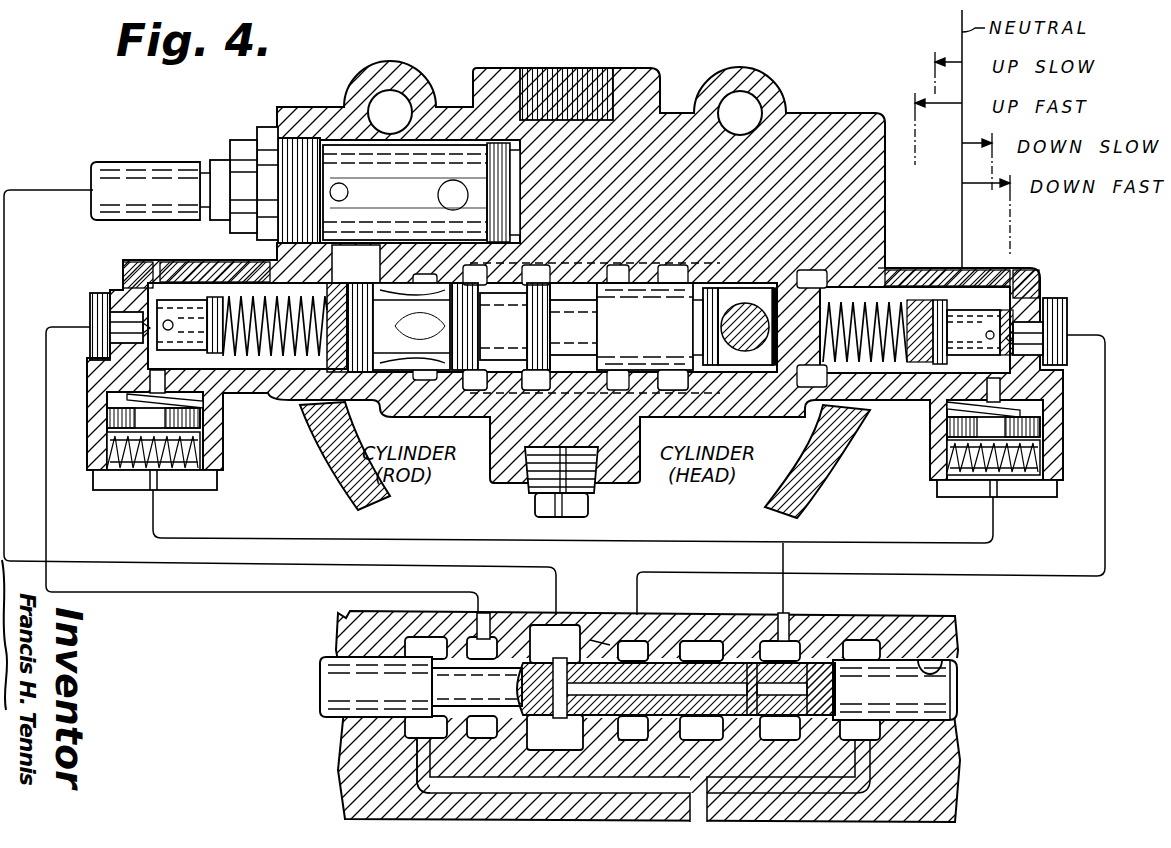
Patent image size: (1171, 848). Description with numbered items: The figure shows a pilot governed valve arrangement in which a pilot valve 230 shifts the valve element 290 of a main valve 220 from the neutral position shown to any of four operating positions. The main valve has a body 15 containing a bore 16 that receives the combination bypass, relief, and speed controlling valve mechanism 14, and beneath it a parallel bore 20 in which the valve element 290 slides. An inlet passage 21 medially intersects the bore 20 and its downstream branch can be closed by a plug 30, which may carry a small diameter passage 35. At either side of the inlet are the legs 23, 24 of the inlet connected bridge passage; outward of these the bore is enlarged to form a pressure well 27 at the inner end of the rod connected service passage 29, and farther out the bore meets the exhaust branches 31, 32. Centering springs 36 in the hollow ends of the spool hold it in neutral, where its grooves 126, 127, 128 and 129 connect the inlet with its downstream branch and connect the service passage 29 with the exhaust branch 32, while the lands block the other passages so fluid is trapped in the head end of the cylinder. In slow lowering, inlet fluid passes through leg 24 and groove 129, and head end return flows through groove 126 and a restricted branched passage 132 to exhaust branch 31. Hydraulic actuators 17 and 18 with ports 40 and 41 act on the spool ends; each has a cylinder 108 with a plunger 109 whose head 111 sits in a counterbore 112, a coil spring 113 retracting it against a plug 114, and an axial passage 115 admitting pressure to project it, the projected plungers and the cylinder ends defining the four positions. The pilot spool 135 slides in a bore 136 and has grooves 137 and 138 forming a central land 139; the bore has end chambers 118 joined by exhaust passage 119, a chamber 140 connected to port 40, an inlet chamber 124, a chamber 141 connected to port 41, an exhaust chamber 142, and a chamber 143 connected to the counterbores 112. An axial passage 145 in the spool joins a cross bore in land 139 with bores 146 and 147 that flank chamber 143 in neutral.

The combination bypass, relief, and speed controlling valve mechanism 14 is at (440, 66).
The body 15 is at (630, 80).
The bore 16 is at (330, 133).
The hydraulic actuator 17 is at (112, 270).
The hydraulic actuator 18 is at (1042, 290).
The bore 20 is at (575, 295).
The inlet passage 21 is at (540, 298).
The leg of bridge passage 23 is at (560, 385).
The leg of bridge passage 24 is at (475, 392).
The pressure well 27 is at (418, 372).
The service passage 29 is at (378, 292).
The plug 30 is at (530, 480).
The exhaust branch 31 is at (808, 433).
The exhaust branch 32 is at (320, 420).
The small diameter passage 35 is at (550, 520).
The centering springs 36 is at (252, 300).
The port 40 is at (122, 328).
The port 41 is at (1033, 338).
The cylinder 108 is at (178, 280).
The plunger 109 is at (150, 385).
The head 111 is at (112, 420).
The counterbore 112 is at (112, 446).
The coil spring 113 is at (200, 402).
The plug 114 is at (202, 486).
The axial passage 115 is at (145, 487).
The end chambers 118 is at (345, 650).
The exhaust passage 119 is at (355, 790).
The inlet chamber 124 is at (568, 640).
The groove 126 is at (706, 318).
The groove 127 is at (590, 298).
The groove 128 is at (503, 296).
The groove 129 is at (405, 372).
The restricted branched passage 132 is at (727, 385).
The spool 135 is at (945, 694).
The bore 136 is at (945, 660).
The groove 137 is at (497, 640).
The groove 138 is at (660, 645).
The central land 139 is at (583, 635).
The chamber 140 is at (485, 725).
The chamber 141 is at (638, 725).
The chamber 142 is at (698, 645).
The chamber 143 is at (783, 640).
The axial passage 145 is at (556, 703).
The cross bore 146 is at (770, 645).
The cross bore 147 is at (815, 660).
The main valve 220 is at (822, 100).
The pilot valve 230 is at (962, 628).
The valve element 290 is at (632, 272).